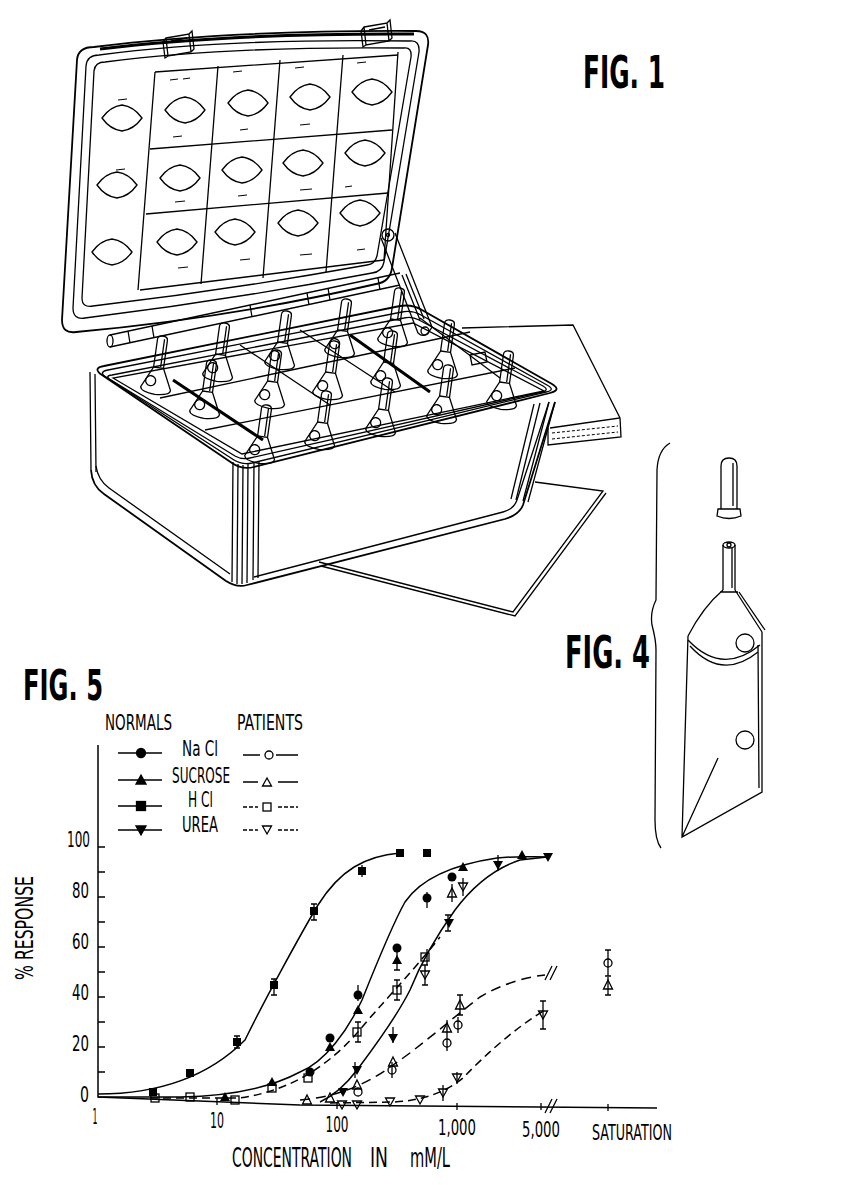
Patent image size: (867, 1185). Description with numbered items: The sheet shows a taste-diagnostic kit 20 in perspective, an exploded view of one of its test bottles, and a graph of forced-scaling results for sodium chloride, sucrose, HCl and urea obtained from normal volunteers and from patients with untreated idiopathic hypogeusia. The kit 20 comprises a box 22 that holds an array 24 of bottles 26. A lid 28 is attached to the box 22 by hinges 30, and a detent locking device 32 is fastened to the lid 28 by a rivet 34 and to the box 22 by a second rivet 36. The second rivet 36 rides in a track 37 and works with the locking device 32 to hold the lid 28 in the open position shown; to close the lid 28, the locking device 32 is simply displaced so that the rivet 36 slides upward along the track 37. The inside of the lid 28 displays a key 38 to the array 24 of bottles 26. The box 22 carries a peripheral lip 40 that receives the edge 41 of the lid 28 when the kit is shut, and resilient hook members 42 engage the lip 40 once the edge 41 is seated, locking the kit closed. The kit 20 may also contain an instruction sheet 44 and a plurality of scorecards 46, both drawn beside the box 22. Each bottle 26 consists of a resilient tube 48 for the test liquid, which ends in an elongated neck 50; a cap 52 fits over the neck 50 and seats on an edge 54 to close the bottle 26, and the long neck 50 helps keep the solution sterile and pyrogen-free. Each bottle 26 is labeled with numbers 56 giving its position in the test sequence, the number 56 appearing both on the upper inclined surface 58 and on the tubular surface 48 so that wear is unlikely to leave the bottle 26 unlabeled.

In FIG. 1, the diagnostic kit 20 is at (487, 248).
In FIG. 1, the box 22 is at (462, 328).
In FIG. 1, the array 24 is at (478, 358).
In FIG. 1, the bottle 26 is at (432, 403).
In FIG. 4, the bottle 26 is at (754, 607).
In FIG. 1, the lid 28 is at (411, 178).
In FIG. 1, the hinge 30 is at (312, 294).
In FIG. 1, the detent locking device 32 is at (427, 279).
In FIG. 1, the rivet 34 is at (392, 238).
In FIG. 1, the second rivet 36 is at (428, 328).
In FIG. 1, the track 37 is at (421, 306).
In FIG. 1, the key 38 is at (384, 143).
In FIG. 1, the peripheral lip 40 is at (492, 424).
In FIG. 1, the edge 41 is at (428, 66).
In FIG. 1, the resilient hook member 42 is at (181, 34).
In FIG. 1, the instruction sheet 44 is at (560, 490).
In FIG. 1, the scorecard 46 is at (548, 330).
In FIG. 4, the resilient tube 48 is at (762, 708).
In FIG. 4, the elongated neck 50 is at (740, 555).
In FIG. 4, the cap 52 is at (742, 483).
In FIG. 4, the edge 54 is at (738, 587).
In FIG. 4, the number 56 is at (756, 647).
In FIG. 4, the upper inclined surface 58 is at (758, 623).